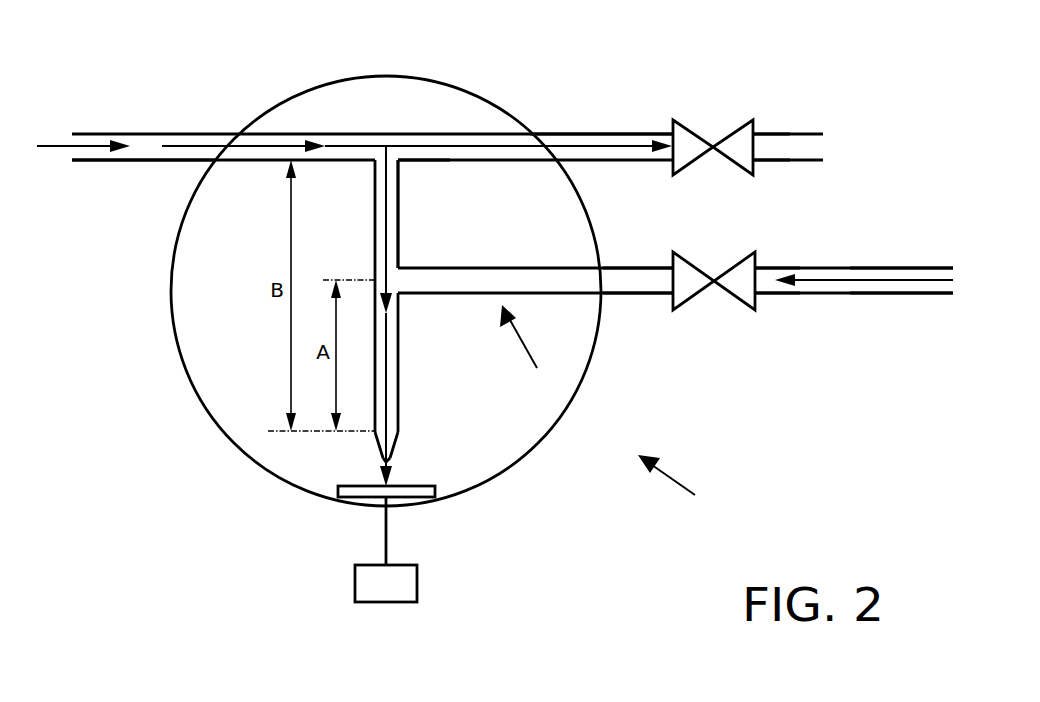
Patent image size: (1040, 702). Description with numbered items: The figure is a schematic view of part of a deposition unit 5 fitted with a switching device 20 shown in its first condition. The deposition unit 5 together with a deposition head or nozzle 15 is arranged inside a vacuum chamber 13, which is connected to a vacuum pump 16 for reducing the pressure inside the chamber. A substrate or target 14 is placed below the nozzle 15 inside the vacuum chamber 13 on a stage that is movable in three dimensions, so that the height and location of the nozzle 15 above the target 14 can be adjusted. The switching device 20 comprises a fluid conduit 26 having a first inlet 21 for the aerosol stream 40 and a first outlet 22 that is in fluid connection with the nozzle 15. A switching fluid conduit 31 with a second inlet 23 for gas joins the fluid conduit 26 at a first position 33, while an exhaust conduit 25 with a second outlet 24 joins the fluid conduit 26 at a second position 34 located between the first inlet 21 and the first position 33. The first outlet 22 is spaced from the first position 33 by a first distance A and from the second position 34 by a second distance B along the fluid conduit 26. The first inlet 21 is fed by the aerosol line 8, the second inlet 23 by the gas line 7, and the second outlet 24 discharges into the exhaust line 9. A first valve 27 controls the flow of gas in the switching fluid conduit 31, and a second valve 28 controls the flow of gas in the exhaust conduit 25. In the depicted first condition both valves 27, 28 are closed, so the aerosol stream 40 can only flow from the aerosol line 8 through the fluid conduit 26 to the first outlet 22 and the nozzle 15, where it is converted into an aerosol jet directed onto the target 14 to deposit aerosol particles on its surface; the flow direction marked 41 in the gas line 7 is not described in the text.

The deposition unit 5 is at (676, 487).
The gas line 7 is at (923, 267).
The aerosol line 8 is at (103, 133).
The exhaust line 9 is at (790, 133).
The vacuum chamber 13 is at (215, 433).
The target 14 is at (430, 494).
The nozzle 15 is at (393, 448).
The vacuum pump 16 is at (417, 580).
The switching device 20 is at (529, 351).
The first inlet 21 is at (143, 147).
The first outlet 22 is at (392, 432).
The second inlet 23 is at (917, 294).
The second outlet 24 is at (767, 145).
The exhaust conduit 25 is at (578, 133).
The fluid conduit 26 is at (130, 161).
The first valve 27 is at (686, 291).
The second valve 28 is at (687, 153).
The switching fluid conduit 31 is at (622, 294).
The first position 33 is at (398, 280).
The second position 34 is at (385, 140).
The aerosol stream 40 is at (273, 146).
The flow direction 41 is at (870, 279).